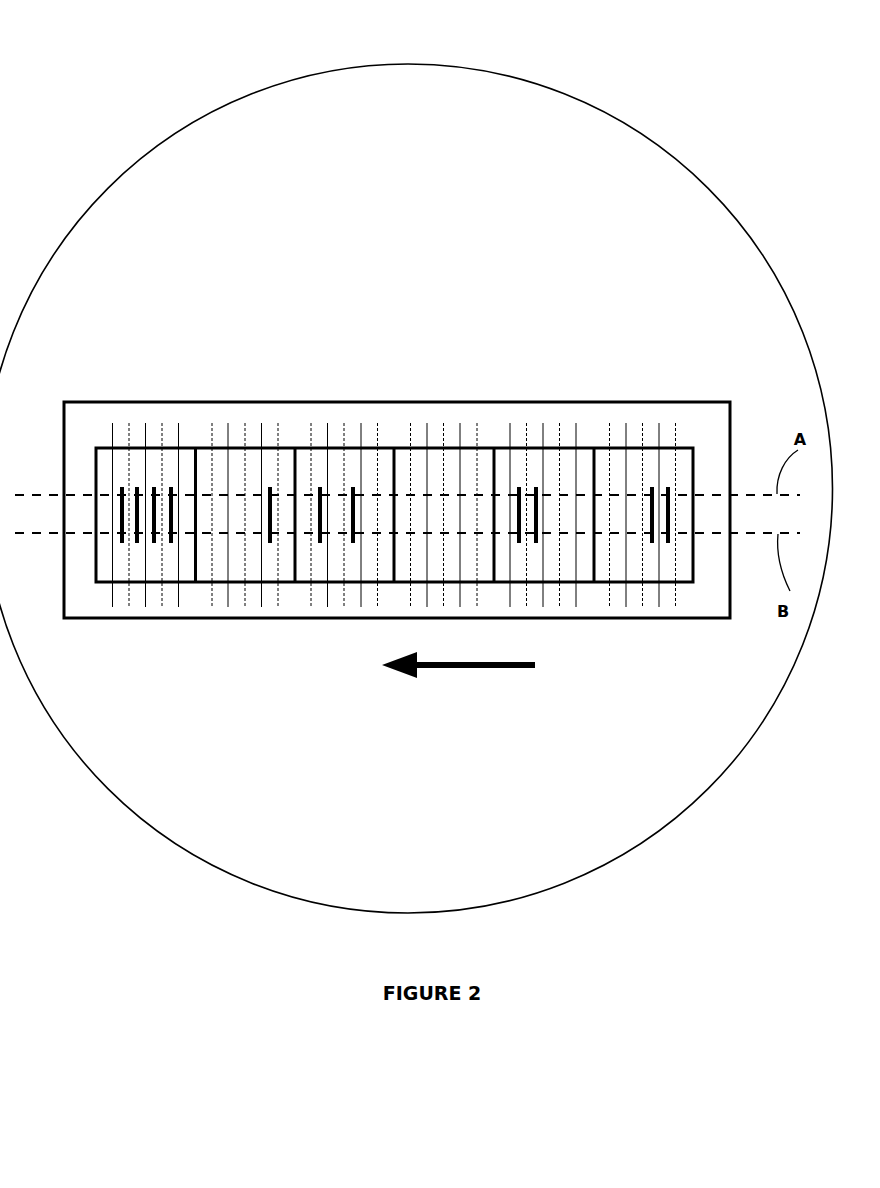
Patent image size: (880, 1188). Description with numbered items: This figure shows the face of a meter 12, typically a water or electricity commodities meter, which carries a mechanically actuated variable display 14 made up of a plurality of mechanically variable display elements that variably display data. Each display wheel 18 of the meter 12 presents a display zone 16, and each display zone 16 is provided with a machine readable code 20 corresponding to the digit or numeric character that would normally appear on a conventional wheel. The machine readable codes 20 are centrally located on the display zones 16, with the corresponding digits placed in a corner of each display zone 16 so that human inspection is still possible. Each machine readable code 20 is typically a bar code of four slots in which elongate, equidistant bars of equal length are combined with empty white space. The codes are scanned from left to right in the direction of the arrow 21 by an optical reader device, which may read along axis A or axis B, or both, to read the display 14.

The meter 12 is at (569, 94).
The mechanically actuated variable display 14 is at (528, 360).
The display zone 16 is at (200, 466).
The display wheel 18 is at (104, 583).
The machine readable code 20 is at (668, 471).
The arrow 21 is at (485, 669).